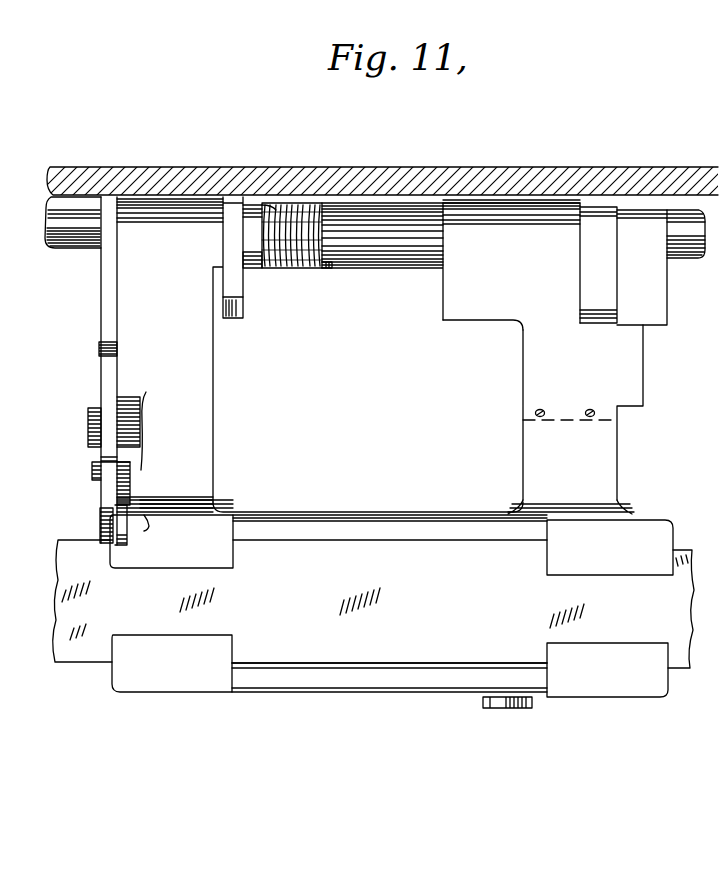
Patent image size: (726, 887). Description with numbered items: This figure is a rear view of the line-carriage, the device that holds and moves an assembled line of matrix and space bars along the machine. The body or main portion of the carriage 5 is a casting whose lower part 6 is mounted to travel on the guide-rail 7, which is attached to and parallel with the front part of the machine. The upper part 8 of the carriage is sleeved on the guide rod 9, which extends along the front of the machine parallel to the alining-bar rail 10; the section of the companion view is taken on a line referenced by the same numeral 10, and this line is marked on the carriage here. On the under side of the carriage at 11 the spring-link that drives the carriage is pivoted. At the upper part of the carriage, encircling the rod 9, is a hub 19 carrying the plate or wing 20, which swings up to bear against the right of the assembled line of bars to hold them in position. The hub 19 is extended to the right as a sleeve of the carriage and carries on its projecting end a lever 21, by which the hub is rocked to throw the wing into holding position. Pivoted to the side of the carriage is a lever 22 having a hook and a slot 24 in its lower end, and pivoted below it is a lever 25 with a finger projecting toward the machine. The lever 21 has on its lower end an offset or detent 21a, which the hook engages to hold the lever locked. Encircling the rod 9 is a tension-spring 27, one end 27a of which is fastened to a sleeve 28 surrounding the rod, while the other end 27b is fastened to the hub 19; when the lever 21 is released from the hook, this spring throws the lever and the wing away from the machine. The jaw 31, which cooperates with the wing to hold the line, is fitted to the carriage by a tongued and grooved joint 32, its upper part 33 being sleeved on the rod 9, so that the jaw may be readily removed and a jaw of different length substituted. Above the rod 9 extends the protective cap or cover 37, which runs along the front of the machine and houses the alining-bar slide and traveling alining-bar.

The body or main portion of the carriage 5 is at (202, 428).
The lower part of the carriage 6 is at (356, 521).
The guide-rail 7 is at (373, 604).
The upper part of the carriage 8 is at (180, 354).
The guide rod 9 is at (78, 238).
The alining-bar rail 10 is at (287, 340).
The pivot on the under side of the carriage 11 is at (508, 700).
The hub 19 is at (238, 214).
The plate or wing 20 is at (240, 334).
The lever 21 is at (105, 307).
The offset or detent 21a is at (100, 350).
The lever 22 is at (107, 386).
The slot 24 is at (98, 460).
The lever 25 is at (100, 505).
The tension-spring 27 is at (322, 183).
The end of the tension-spring 27a is at (318, 265).
The end of the tension-spring 27b is at (270, 203).
The sleeve 28 is at (404, 260).
The jaw 31 is at (583, 412).
The tongued and grooved joint 32 is at (618, 413).
The upper part of the jaw 33 is at (555, 266).
The cap or cover 37 is at (563, 181).